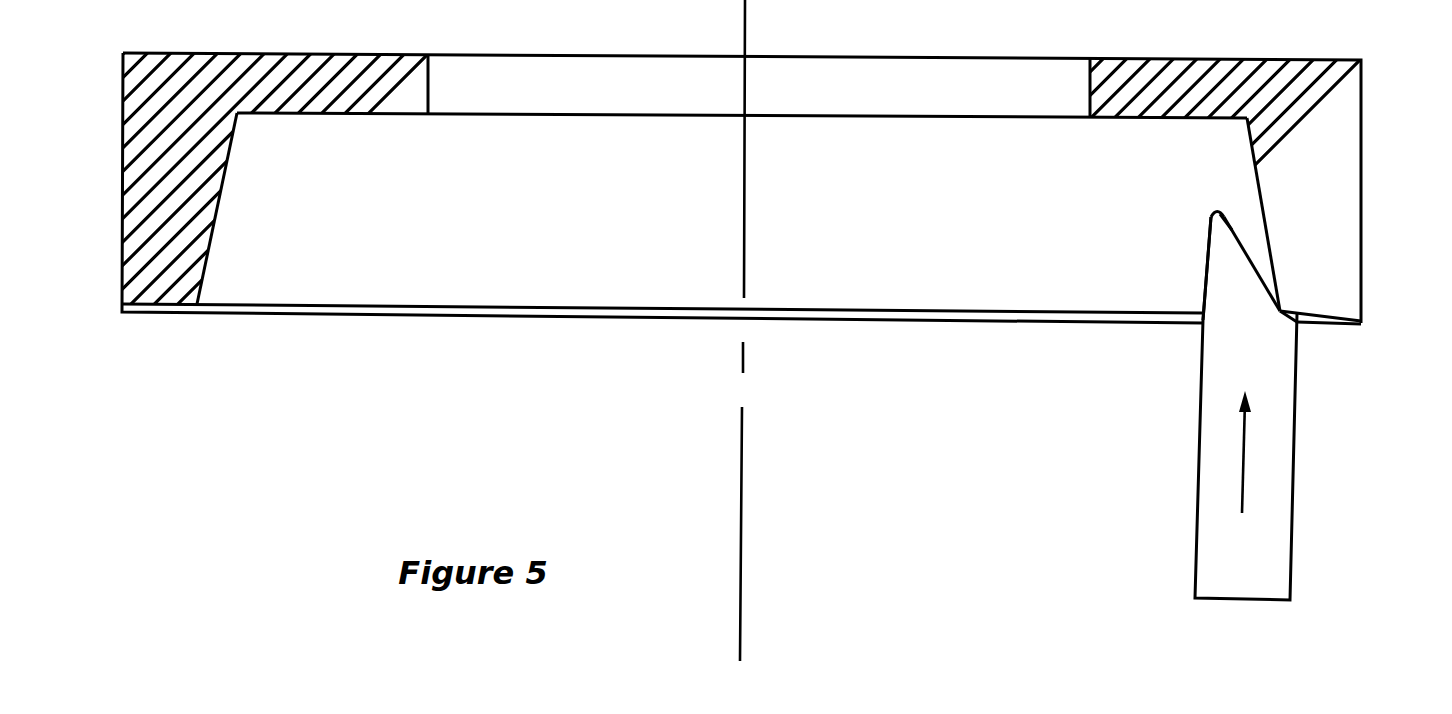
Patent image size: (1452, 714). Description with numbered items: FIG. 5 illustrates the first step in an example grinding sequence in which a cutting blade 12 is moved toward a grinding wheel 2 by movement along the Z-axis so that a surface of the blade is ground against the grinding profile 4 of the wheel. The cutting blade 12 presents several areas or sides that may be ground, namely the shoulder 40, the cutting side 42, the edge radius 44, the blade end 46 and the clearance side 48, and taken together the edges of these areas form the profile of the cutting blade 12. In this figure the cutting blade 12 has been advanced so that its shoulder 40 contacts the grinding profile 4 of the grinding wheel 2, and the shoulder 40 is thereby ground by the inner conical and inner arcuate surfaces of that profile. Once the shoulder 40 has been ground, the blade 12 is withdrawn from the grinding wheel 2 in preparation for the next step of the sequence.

The grinding wheel 2 is at (1372, 216).
The grinding profile 4 is at (1342, 331).
The cutting blade 12 is at (1304, 566).
The shoulder 40 is at (1283, 327).
The cutting side 42 is at (1261, 275).
The edge radius 44 is at (1229, 219).
The blade end 46 is at (1216, 207).
The clearance side 48 is at (1206, 243).